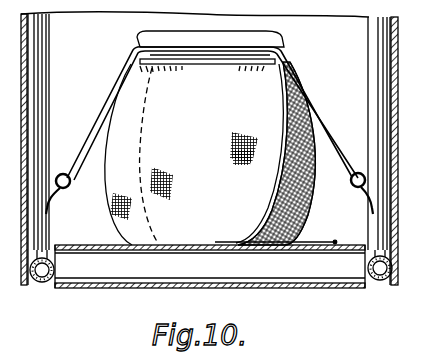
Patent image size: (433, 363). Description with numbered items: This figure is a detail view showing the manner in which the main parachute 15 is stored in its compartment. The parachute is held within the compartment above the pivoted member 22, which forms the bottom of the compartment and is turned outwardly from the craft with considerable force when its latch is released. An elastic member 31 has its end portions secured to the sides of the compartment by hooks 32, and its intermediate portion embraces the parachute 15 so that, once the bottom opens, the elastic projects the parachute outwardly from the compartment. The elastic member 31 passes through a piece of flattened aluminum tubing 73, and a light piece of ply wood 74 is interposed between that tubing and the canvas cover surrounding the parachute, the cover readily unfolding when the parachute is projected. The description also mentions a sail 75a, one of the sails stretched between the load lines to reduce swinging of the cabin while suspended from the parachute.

The main parachute 15 is at (394, 96).
The pivoted member 22 is at (326, 286).
The elastic member 31 is at (313, 89).
The hooks 32 is at (57, 193).
The flattened aluminum tubing 73 is at (268, 40).
The ply wood 74 is at (209, 65).
The sail 75a is at (210, 153).